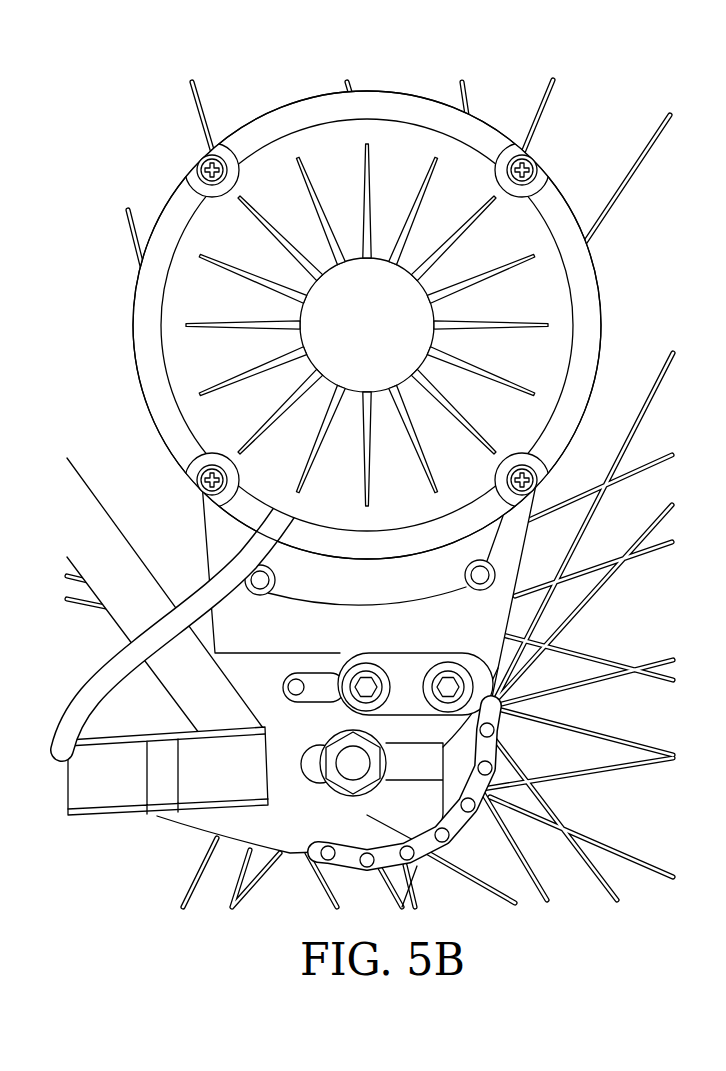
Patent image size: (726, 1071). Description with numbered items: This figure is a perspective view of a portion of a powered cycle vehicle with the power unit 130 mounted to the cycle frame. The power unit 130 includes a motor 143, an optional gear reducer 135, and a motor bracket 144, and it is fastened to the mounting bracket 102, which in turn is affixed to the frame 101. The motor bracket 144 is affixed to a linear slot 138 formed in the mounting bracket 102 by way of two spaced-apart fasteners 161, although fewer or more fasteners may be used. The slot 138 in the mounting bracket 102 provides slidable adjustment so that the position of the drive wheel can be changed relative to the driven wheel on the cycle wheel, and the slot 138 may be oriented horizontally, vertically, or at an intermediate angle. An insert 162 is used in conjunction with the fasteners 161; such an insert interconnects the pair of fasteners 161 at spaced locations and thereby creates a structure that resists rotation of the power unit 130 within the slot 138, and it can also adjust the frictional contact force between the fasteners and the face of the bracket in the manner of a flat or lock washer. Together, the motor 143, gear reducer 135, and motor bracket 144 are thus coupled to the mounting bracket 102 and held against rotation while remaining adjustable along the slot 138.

The frame 101 is at (97, 521).
The mounting bracket 102 is at (437, 846).
The power unit 130 is at (386, 420).
The gear reducer 135 is at (490, 546).
The linear slot 138 is at (322, 680).
The motor 143 is at (515, 232).
The motor bracket 144 is at (503, 603).
The fasteners 161 is at (498, 670).
The insert 162 is at (417, 670).